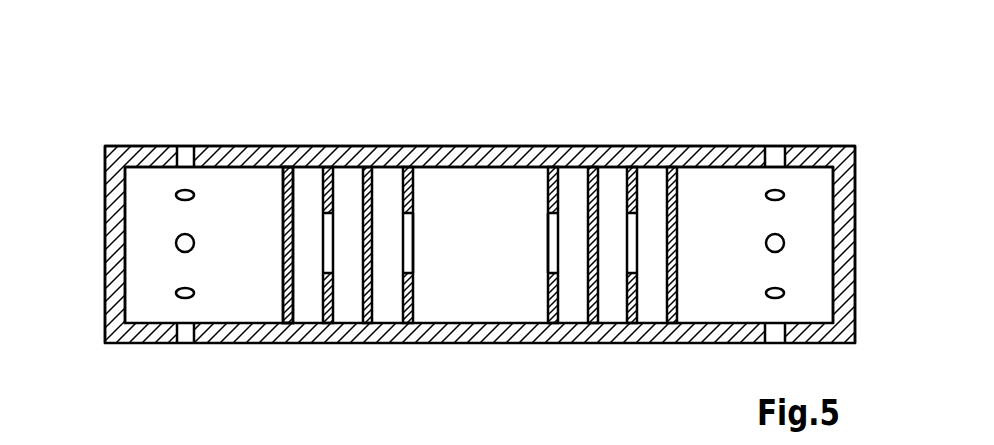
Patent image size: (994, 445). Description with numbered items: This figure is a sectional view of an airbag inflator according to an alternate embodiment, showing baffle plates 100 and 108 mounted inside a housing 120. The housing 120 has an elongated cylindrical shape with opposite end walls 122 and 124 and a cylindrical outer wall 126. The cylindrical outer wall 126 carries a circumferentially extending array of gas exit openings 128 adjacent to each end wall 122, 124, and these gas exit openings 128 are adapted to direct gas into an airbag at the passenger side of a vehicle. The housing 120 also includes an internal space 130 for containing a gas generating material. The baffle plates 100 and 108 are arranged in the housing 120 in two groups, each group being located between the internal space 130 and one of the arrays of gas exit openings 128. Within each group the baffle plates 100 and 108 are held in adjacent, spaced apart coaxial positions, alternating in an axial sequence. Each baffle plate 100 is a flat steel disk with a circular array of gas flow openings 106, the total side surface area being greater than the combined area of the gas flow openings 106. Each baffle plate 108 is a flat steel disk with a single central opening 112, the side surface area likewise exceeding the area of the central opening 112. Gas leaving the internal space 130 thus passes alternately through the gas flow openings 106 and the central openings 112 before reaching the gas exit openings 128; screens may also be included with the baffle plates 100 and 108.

The housing 120 is at (148, 108).
The end wall 122 is at (105, 190).
The end wall 124 is at (855, 233).
The cylindrical outer wall 126 is at (450, 146).
The gas exit openings 128 is at (778, 240).
The internal space 130 is at (492, 190).
The baffle plate 100 is at (677, 233).
The baffle plate 108 is at (633, 170).
The gas flow openings 106 is at (283, 298).
The central opening 112 is at (548, 238).